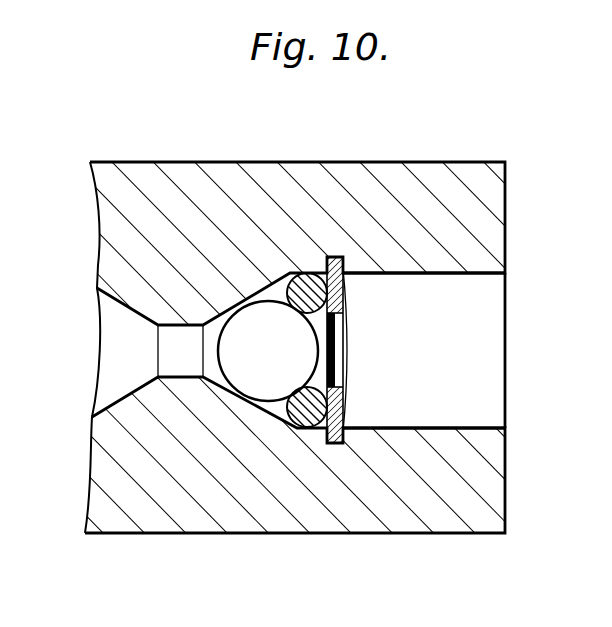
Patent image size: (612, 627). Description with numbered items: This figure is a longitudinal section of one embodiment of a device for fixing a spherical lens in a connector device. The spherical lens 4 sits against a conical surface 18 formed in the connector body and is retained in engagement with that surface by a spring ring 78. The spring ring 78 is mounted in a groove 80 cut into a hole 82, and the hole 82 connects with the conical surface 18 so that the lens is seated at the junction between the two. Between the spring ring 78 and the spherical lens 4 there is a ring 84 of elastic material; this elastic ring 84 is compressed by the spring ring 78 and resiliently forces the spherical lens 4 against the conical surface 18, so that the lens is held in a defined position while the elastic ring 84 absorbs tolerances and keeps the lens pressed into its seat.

The spherical lens 4 is at (226, 350).
The conical surface 18 is at (275, 286).
The spring ring 78 is at (345, 406).
The groove 80 is at (332, 257).
The hole 82 is at (483, 276).
The ring of elastic material 84 is at (307, 415).